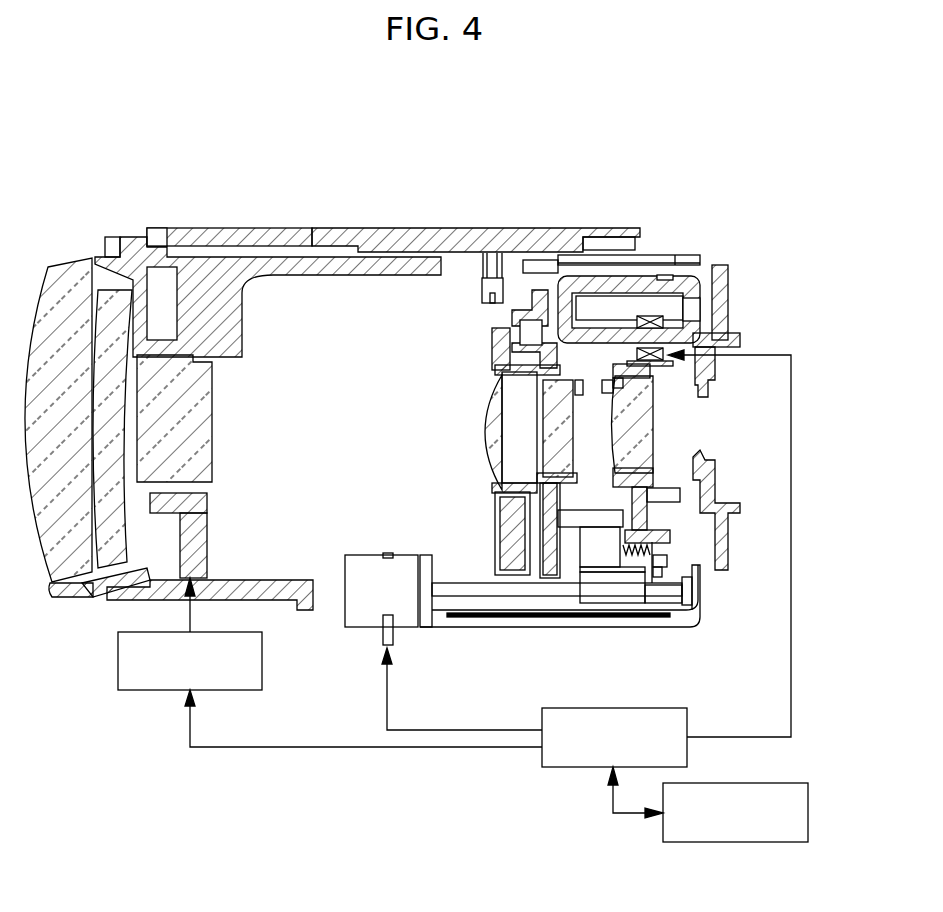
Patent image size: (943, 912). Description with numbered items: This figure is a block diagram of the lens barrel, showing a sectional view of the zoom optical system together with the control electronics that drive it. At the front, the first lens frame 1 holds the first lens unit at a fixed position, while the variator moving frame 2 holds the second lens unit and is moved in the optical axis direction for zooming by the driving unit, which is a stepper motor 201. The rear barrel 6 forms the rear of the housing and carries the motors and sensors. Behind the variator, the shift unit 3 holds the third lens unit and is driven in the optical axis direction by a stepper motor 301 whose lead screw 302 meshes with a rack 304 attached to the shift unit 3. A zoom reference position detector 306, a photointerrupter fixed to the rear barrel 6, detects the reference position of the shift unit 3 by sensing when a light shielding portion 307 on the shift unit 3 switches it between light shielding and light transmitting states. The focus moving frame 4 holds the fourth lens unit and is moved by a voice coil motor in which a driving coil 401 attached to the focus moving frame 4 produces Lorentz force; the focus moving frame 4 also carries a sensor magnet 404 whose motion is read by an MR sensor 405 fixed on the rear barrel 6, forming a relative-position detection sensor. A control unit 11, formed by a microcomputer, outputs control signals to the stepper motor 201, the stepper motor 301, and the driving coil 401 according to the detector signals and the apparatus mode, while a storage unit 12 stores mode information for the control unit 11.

The first lens frame 1 is at (68, 283).
The variator moving frame 2 is at (302, 278).
The shift unit 3 is at (488, 345).
The focus moving frame 4 is at (653, 407).
The rear barrel 6 is at (417, 228).
The control unit 11 is at (672, 707).
The storage unit 12 is at (795, 783).
The driving unit (stepper motor) 201 is at (140, 692).
The stepper motor 301 is at (475, 625).
The lead screw 302 is at (538, 588).
The rack 304 is at (612, 587).
The zoom reference position detector 306 is at (480, 280).
The light shielding portion 307 is at (535, 297).
The driving coil 401 is at (648, 317).
The sensor magnet 404 is at (652, 257).
The MR sensor 405 is at (601, 238).